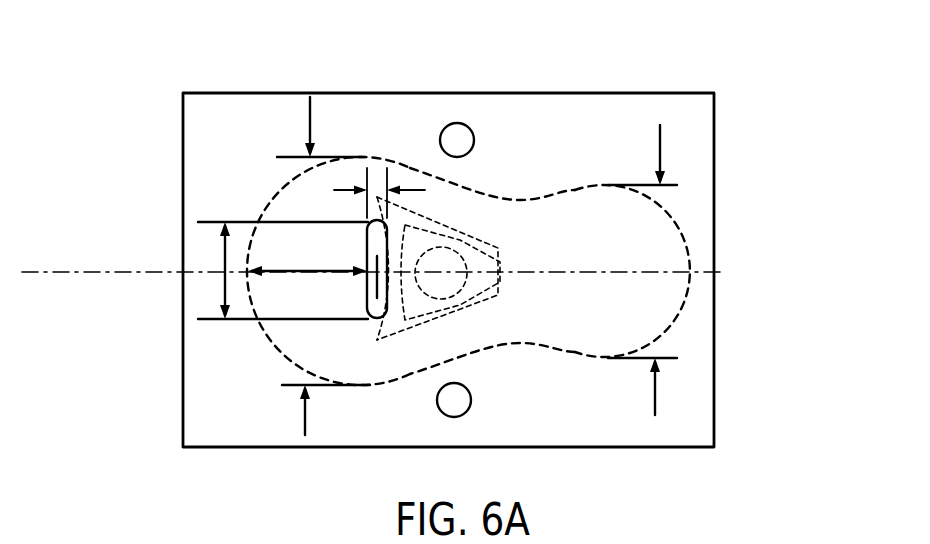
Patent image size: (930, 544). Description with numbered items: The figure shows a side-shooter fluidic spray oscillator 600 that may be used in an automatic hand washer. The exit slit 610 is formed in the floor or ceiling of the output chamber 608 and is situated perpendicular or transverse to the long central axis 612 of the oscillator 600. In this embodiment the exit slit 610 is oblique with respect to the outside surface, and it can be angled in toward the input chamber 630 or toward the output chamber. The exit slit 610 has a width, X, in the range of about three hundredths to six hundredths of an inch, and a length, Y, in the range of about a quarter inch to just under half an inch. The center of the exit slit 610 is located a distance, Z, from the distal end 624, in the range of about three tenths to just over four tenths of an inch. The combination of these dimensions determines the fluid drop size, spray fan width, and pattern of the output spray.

The side-shooter fluidic spray oscillator 600 is at (146, 64).
The long central axis 612 is at (84, 271).
The distal end 624 is at (253, 272).
The output chamber 608 is at (300, 338).
The input chamber 630 is at (653, 301).
The exit slit 610 is at (385, 303).